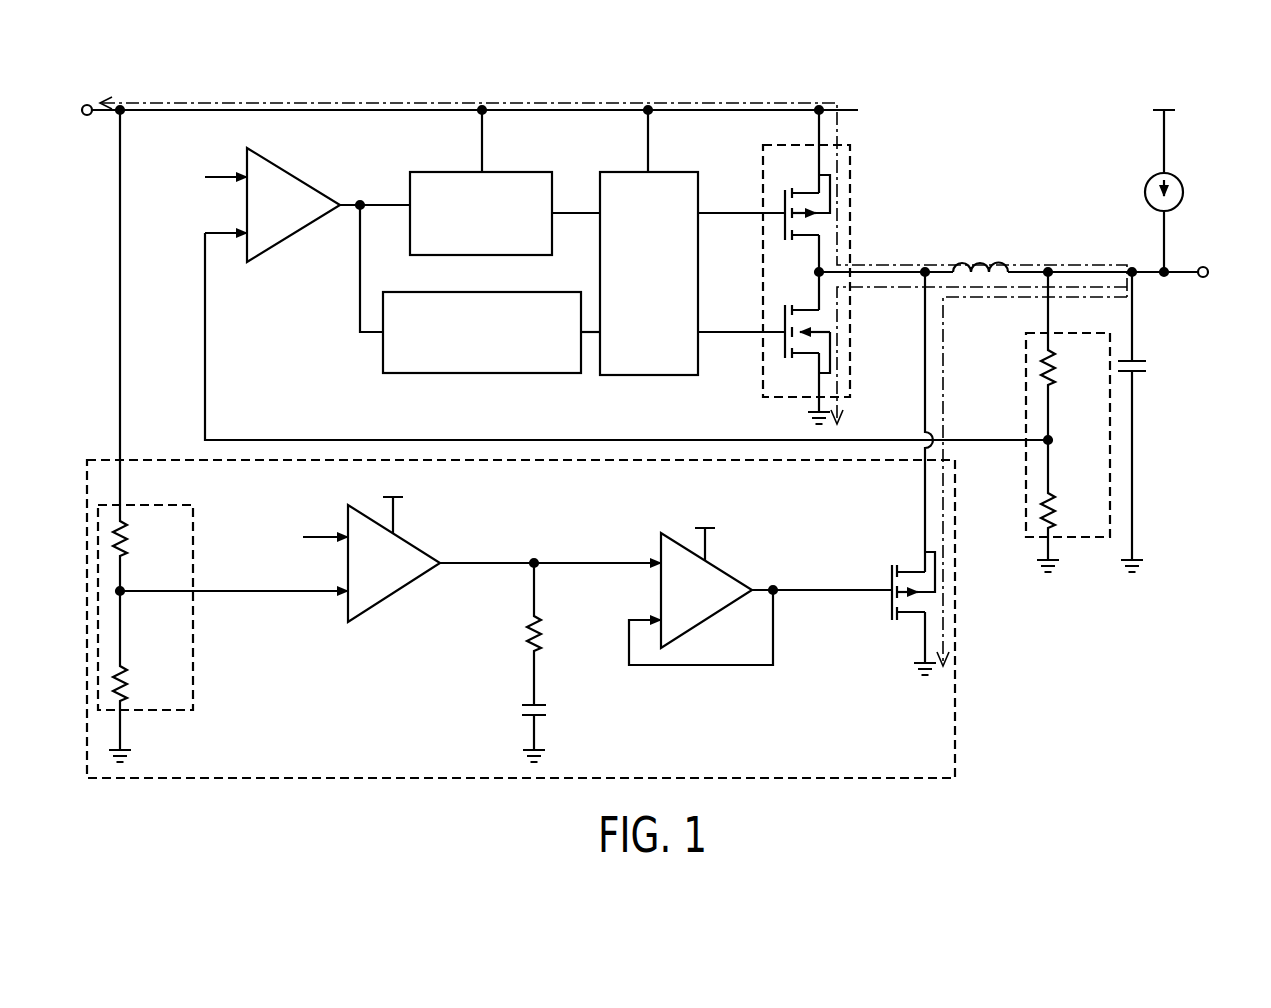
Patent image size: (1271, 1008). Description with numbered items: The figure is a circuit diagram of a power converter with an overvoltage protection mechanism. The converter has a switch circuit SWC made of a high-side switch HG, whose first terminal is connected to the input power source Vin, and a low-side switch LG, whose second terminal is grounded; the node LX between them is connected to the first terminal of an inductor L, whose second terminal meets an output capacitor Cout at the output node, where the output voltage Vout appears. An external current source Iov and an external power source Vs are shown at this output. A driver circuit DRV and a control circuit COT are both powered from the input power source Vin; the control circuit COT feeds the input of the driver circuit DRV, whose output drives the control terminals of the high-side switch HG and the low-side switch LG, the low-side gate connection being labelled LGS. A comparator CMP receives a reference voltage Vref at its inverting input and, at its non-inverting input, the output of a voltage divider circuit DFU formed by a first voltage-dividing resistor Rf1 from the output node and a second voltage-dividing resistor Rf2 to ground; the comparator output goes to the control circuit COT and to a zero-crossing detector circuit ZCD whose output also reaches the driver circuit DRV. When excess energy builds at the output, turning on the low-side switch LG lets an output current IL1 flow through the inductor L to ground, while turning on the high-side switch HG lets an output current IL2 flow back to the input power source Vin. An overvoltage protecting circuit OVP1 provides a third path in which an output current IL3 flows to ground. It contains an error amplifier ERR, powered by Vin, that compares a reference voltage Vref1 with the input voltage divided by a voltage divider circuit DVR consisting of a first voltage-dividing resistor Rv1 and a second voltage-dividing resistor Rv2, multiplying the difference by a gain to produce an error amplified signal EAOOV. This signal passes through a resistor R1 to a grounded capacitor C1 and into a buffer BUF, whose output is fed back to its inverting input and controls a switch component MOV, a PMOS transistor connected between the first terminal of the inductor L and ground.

The input power source Vin is at (450, 307).
The output current of second current releasing path IL2 is at (613, 185).
The comparator CMP is at (298, 238).
The reference voltage Vref is at (197, 177).
The control circuit COT is at (435, 172).
The driver circuit DRV is at (640, 172).
The low-side gate signal LGS is at (741, 318).
The zero-crossing detector circuit ZCD is at (412, 373).
The switch circuit SWC is at (851, 171).
The high-side switch HG is at (802, 191).
The low-side switch LG is at (802, 348).
The node LX is at (986, 415).
The output current of first current releasing path IL1 is at (979, 355).
The output current of third current releasing path IL3 is at (1032, 481).
The inductor L is at (976, 252).
The external power source Vs is at (1165, 125).
The external current source Iov is at (1184, 224).
The output voltage Vout is at (1231, 274).
The output capacitor Cout is at (1159, 420).
The voltage divider circuit DFU is at (1083, 537).
The first voltage-dividing resistor Rf1 is at (1073, 356).
The second voltage-dividing resistor Rf2 is at (1071, 506).
The overvoltage protecting circuit OVP1 is at (955, 704).
The voltage divider circuit DVR is at (193, 637).
The first voltage-dividing resistor Rv1 is at (147, 554).
The second voltage-dividing resistor Rv2 is at (145, 676).
The error amplifier ERR is at (395, 597).
The reference voltage Vref1 is at (294, 536).
The error amplified signal EAOOV is at (550, 547).
The resistor R1 is at (514, 608).
The capacitor C1 is at (516, 707).
The buffer BUF is at (707, 620).
The switch component MOV is at (894, 604).